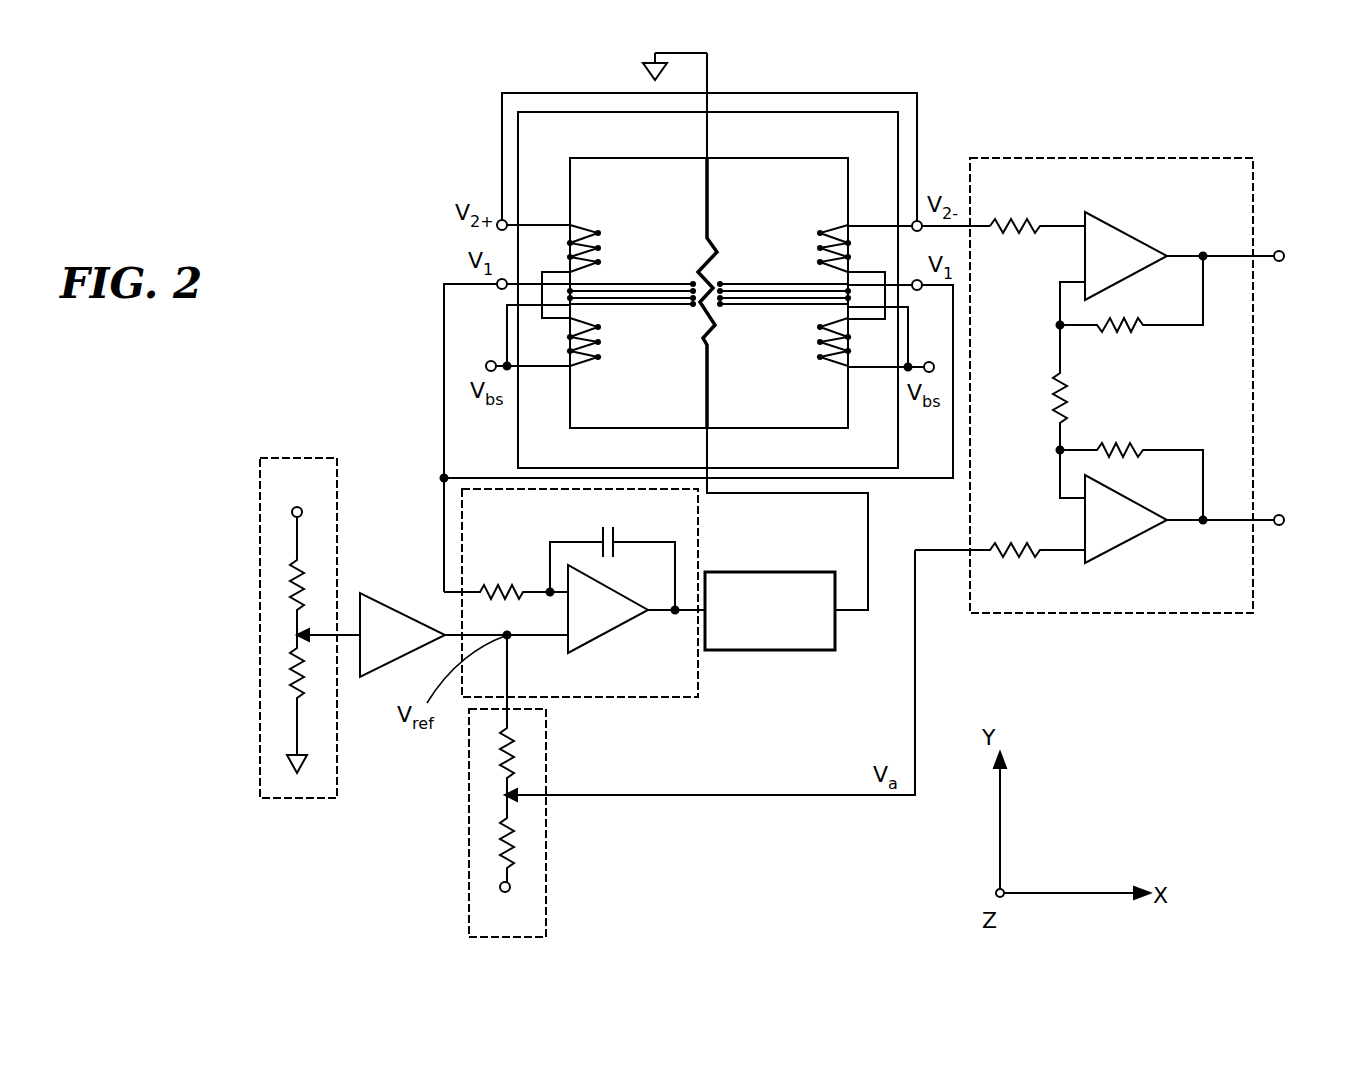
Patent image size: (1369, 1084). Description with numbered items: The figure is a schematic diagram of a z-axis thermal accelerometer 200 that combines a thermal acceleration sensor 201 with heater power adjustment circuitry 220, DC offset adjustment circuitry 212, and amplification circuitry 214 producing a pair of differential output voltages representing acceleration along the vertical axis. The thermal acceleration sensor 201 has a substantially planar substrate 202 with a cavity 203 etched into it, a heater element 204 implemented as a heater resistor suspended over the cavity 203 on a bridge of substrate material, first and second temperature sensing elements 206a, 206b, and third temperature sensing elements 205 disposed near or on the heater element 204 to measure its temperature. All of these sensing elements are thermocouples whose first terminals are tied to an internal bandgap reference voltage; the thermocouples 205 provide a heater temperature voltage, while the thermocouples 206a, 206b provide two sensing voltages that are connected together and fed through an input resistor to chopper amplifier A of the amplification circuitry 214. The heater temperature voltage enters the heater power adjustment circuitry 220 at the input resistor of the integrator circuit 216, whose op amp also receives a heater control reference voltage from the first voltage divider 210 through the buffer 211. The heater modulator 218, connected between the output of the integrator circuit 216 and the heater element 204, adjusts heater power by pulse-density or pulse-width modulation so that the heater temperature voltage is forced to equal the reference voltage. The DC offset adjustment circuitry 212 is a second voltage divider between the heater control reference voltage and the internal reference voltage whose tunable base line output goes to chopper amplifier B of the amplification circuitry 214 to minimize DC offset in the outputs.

The z-axis thermal accelerometer 200 is at (367, 162).
The thermal acceleration sensor 201 is at (537, 85).
The substrate 202 is at (573, 146).
The cavity 203 is at (850, 175).
The heater element 204 is at (705, 342).
The third temperature sensing elements 205 is at (722, 305).
The first temperature sensing element 206a is at (604, 342).
The second temperature sensing element 206b is at (815, 342).
The first voltage divider 210 is at (300, 458).
The buffer 211 is at (430, 605).
The DC offset adjustment circuitry 212 is at (469, 846).
The amplification circuitry 214 is at (1130, 158).
The integrator circuit 216 is at (616, 697).
The heater modulator 218 is at (766, 651).
The heater power adjustment circuitry 220 is at (359, 314).